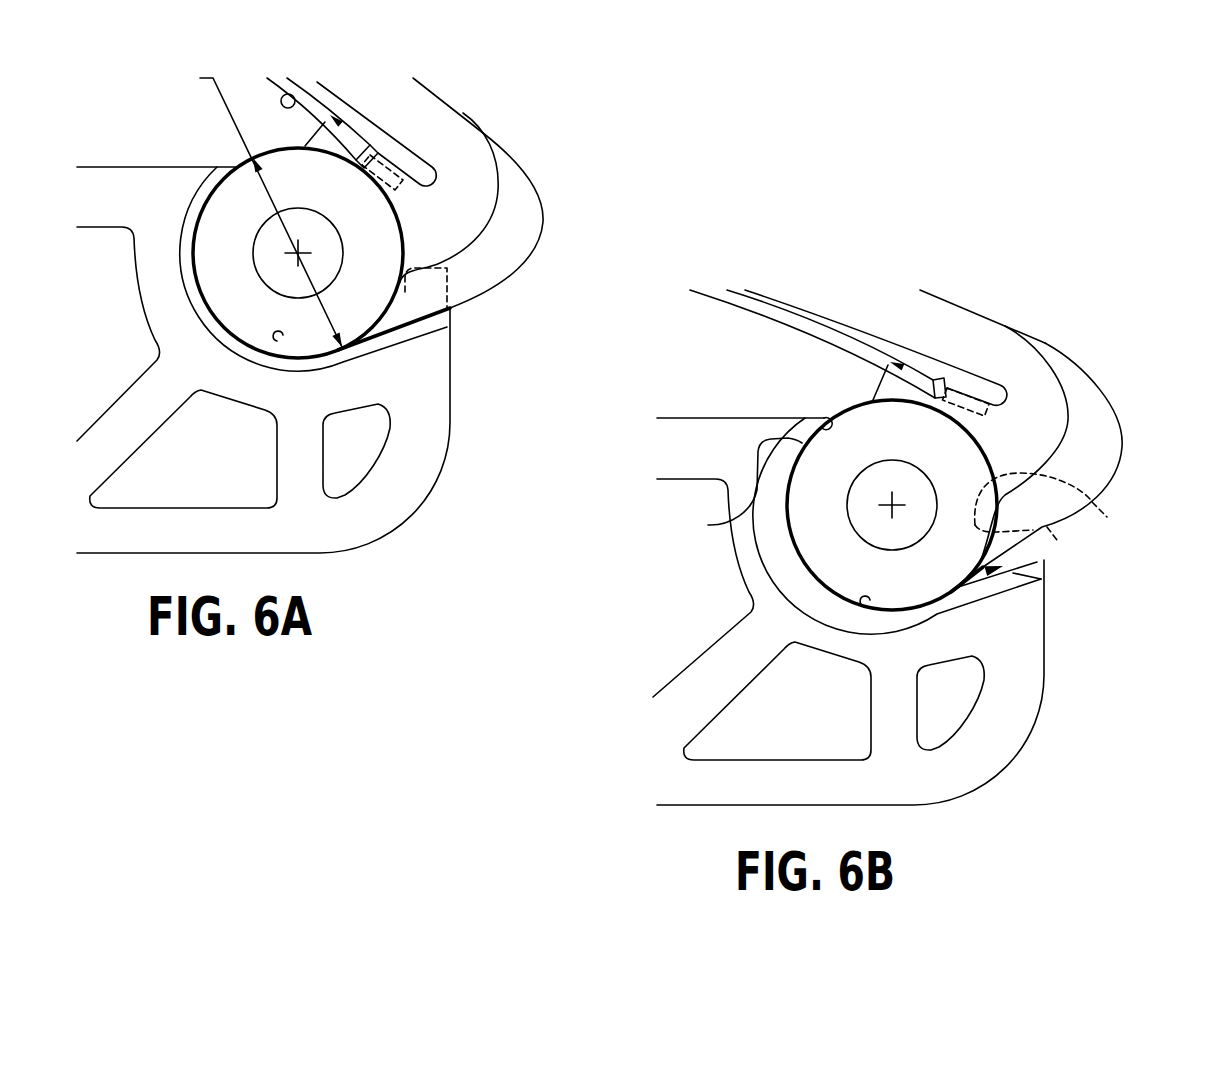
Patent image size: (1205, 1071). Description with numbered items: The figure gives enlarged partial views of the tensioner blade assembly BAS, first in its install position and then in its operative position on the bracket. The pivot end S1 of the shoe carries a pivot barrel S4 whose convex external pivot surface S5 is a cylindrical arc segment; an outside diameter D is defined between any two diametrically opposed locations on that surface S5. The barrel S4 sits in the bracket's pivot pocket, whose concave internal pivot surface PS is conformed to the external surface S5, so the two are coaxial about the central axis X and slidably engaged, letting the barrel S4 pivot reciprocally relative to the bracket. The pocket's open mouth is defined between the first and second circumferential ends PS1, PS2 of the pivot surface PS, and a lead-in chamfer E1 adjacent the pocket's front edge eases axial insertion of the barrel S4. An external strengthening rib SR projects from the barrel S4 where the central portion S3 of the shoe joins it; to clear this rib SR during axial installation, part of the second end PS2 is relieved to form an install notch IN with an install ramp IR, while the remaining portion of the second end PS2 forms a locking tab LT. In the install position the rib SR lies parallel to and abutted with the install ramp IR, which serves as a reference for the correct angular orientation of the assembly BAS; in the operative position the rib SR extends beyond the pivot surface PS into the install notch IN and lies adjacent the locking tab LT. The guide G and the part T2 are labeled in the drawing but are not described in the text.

In FIG. 6A, the tensioner blade assembly BAS is at (515, 191).
In FIG. 6B, the tensioner blade assembly BAS is at (1056, 395).
In FIG. 6A, the central portion S3 is at (410, 108).
In FIG. 6B, the central portion S3 is at (937, 322).
In FIG. 6A, the pivot end S1 is at (458, 197).
In FIG. 6B, the pivot end S1 is at (1043, 413).
In FIG. 6A, the external strengthening rib SR is at (510, 247).
In FIG. 6B, the external strengthening rib SR is at (1105, 442).
In FIG. 6A, the guide G is at (293, 96).
In FIG. 6B, the guide G is at (850, 357).
In FIG. 6A, the outside diameter D is at (260, 206).
In FIG. 6A, the external pivot surface S5 is at (243, 165).
In FIG. 6B, the external pivot surface S5 is at (854, 526).
In FIG. 6A, the pivot barrel S4 is at (233, 288).
In FIG. 6B, the pivot barrel S4 is at (827, 540).
In FIG. 6A, the central axis X is at (298, 253).
In FIG. 6B, the central axis X is at (892, 505).
In FIG. 6A, the lead-in chamfer E1 is at (231, 349).
In FIG. 6B, the lead-in chamfer E1 is at (817, 603).
In FIG. 6A, the pivot surface PS is at (283, 335).
In FIG. 6B, the pivot surface PS is at (870, 600).
In FIG. 6A, the second tool part T2 is at (397, 472).
In FIG. 6B, the second tool part T2 is at (1003, 732).
In FIG. 6A, the locking tab LT is at (455, 268).
In FIG. 6B, the locking tab LT is at (1057, 540).
In FIG. 6B, the first circumferential end PS1 is at (826, 418).
In FIG. 6B, the second circumferential end PS2 is at (1065, 509).
In FIG. 6B, the install notch IN is at (977, 580).
In FIG. 6B, the install ramp IR is at (1013, 573).